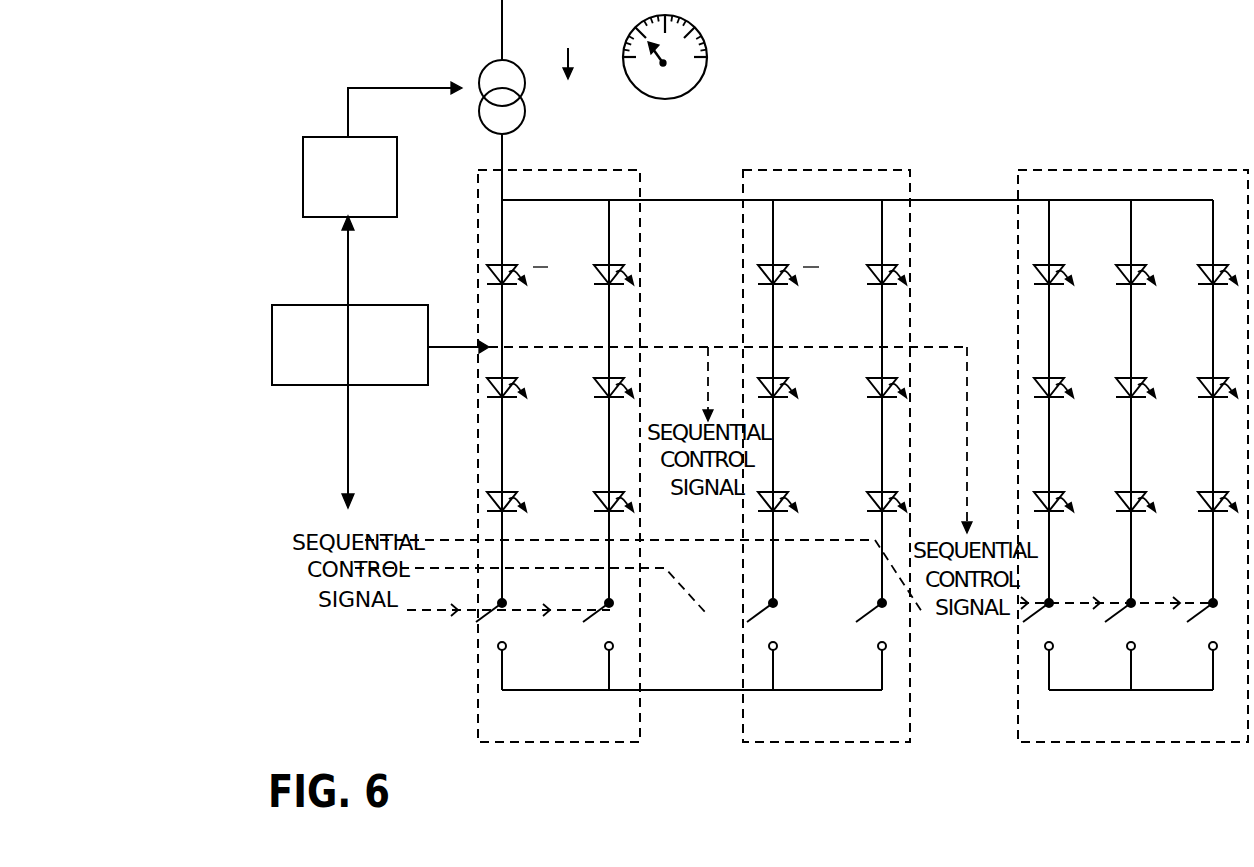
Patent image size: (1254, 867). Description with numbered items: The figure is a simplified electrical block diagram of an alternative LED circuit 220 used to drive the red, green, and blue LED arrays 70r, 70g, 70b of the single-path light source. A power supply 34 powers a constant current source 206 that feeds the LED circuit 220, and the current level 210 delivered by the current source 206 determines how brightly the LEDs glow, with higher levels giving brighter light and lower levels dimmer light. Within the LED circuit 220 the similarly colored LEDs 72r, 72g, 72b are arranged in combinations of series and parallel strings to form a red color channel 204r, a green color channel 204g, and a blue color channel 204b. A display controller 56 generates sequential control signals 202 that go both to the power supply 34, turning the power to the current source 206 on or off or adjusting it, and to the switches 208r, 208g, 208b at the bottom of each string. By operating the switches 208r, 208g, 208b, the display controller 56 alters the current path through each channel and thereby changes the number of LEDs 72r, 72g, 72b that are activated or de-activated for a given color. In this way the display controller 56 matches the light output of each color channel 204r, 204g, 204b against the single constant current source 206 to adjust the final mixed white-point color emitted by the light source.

The power supply 34 is at (390, 137).
The display controller 56 is at (415, 305).
The control signals 202 is at (381, 362).
The current source 206 is at (638, 100).
The current level 210 is at (690, 28).
The LED circuit 220 is at (1109, 137).
The red LED array 70r is at (560, 401).
The green LED array 70g is at (832, 401).
The blue LED array 70b is at (1213, 229).
The red LEDs 72r is at (609, 490).
The green LEDs 72g is at (881, 378).
The blue LEDs 72b is at (1052, 378).
The red color channel 204r is at (528, 462).
The green color channel 204g is at (796, 462).
The blue color channel 204b is at (1102, 462).
The red channel switches 208r is at (495, 644).
The green channel switches 208g is at (725, 528).
The blue channel switches 208b is at (985, 648).